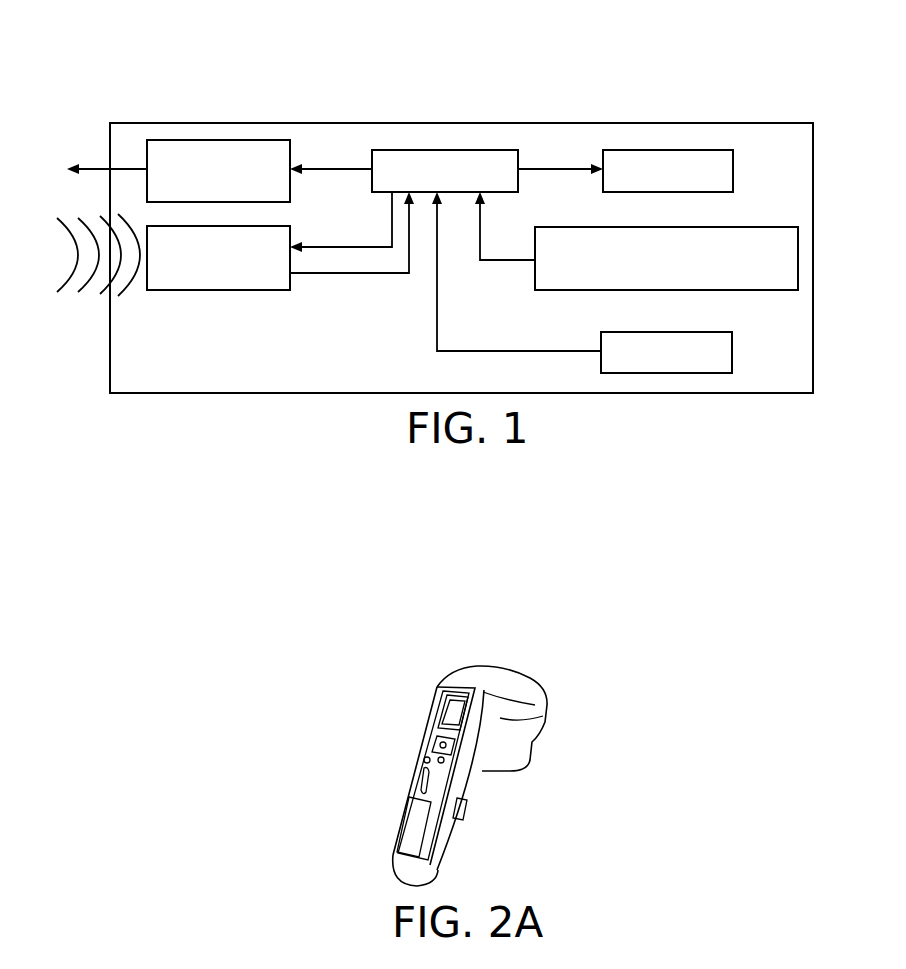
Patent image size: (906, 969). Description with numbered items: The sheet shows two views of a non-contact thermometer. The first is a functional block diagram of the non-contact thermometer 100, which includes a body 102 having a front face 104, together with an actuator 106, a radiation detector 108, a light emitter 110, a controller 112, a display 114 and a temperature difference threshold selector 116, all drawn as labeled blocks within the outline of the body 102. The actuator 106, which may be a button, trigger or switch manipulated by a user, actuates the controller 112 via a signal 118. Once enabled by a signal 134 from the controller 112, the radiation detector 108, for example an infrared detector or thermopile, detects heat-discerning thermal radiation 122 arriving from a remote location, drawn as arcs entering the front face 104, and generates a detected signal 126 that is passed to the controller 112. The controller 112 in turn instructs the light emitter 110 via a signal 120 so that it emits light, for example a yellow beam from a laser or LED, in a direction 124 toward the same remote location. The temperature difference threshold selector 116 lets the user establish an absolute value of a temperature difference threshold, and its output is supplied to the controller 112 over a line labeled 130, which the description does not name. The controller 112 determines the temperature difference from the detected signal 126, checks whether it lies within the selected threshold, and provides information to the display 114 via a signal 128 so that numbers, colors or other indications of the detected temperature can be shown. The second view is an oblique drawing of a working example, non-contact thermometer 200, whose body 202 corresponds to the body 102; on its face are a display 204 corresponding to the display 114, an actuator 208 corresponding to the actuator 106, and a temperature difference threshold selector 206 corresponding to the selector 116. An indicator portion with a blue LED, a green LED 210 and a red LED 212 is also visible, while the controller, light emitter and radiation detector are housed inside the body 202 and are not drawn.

In FIG. 1, the non-contact thermometer 100 is at (116, 62).
In FIG. 1, the body 102 is at (256, 123).
In FIG. 1, the front face 104 is at (110, 338).
In FIG. 1, the actuator 106 is at (732, 348).
In FIG. 1, the radiation detector 108 is at (215, 292).
In FIG. 1, the light emitter 110 is at (218, 139).
In FIG. 1, the controller 112 is at (437, 149).
In FIG. 1, the display 114 is at (663, 150).
In FIG. 1, the temperature difference threshold selector 116 is at (762, 227).
In FIG. 1, the signal 118 is at (471, 350).
In FIG. 1, the signal 120 is at (342, 165).
In FIG. 1, the thermal radiation 122 is at (80, 262).
In FIG. 1, the direction 124 is at (92, 167).
In FIG. 1, the detected signal 126 is at (349, 276).
In FIG. 1, the signal 128 is at (549, 166).
In FIG. 1, the threshold selector signal line 130 is at (503, 259).
In FIG. 1, the signal 134 is at (341, 246).
In FIG. 2A, the non-contact thermometer 200 is at (292, 730).
In FIG. 2A, the body 202 is at (440, 688).
In FIG. 2A, the display 204 is at (463, 720).
In FIG. 2A, the temperature difference threshold selector 206 is at (413, 848).
In FIG. 2A, the actuator 208 is at (424, 758).
In FIG. 2A, the green LED 210 is at (421, 762).
In FIG. 2A, the red LED 212 is at (444, 762).